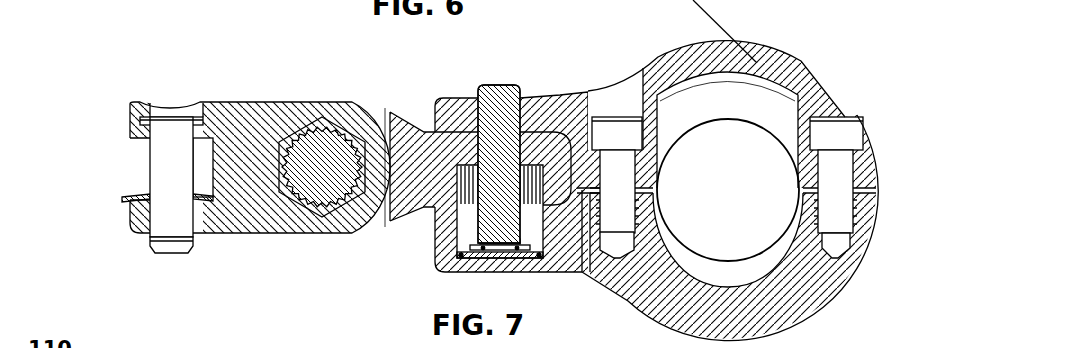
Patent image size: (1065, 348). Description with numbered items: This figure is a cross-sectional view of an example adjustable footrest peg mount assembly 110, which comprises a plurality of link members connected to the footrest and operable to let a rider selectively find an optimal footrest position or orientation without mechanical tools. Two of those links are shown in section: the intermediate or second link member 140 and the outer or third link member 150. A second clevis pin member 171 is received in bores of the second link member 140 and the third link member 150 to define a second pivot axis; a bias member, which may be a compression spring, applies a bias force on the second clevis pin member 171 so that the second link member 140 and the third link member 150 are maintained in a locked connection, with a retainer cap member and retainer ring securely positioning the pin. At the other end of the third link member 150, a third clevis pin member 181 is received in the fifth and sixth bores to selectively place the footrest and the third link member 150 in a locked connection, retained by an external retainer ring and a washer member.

The adjustable footrest peg mount assembly 110 is at (84, 64).
The second link member 140 is at (417, 133).
The third link member 150 is at (267, 115).
The second clevis pin member 171 is at (495, 93).
The third clevis pin member 181 is at (183, 218).